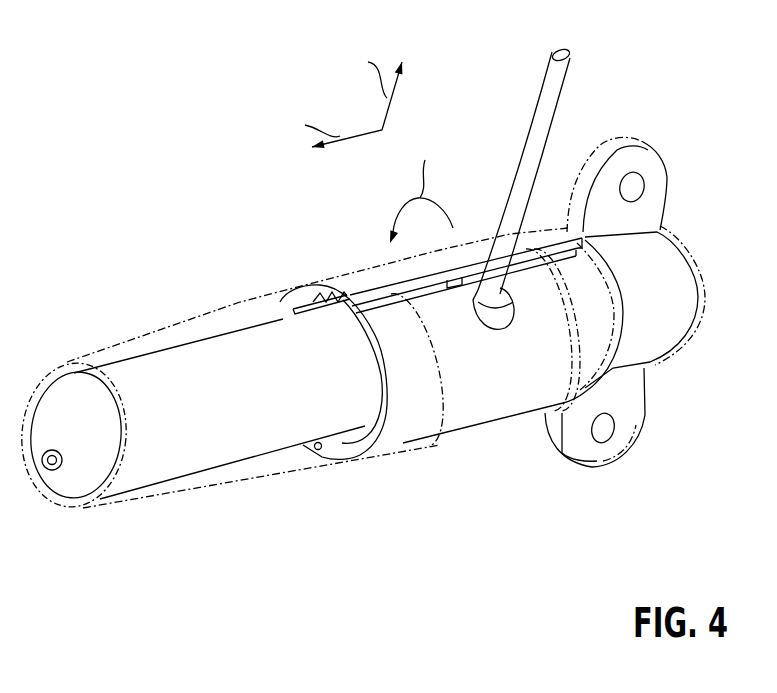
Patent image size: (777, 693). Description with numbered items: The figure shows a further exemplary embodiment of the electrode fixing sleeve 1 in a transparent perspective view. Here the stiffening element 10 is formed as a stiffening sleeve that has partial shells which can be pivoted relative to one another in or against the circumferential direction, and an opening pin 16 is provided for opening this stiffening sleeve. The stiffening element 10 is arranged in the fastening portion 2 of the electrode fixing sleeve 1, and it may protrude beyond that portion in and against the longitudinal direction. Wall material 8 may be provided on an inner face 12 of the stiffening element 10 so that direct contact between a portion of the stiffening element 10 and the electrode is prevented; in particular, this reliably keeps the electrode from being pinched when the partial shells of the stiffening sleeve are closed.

The electrode fixing sleeve 1 is at (105, 163).
The fastening portion 2 is at (485, 489).
The wall material 8 is at (232, 307).
The stiffening element 10 is at (327, 216).
The inner face 12 is at (365, 381).
The opening pin 16 is at (552, 82).